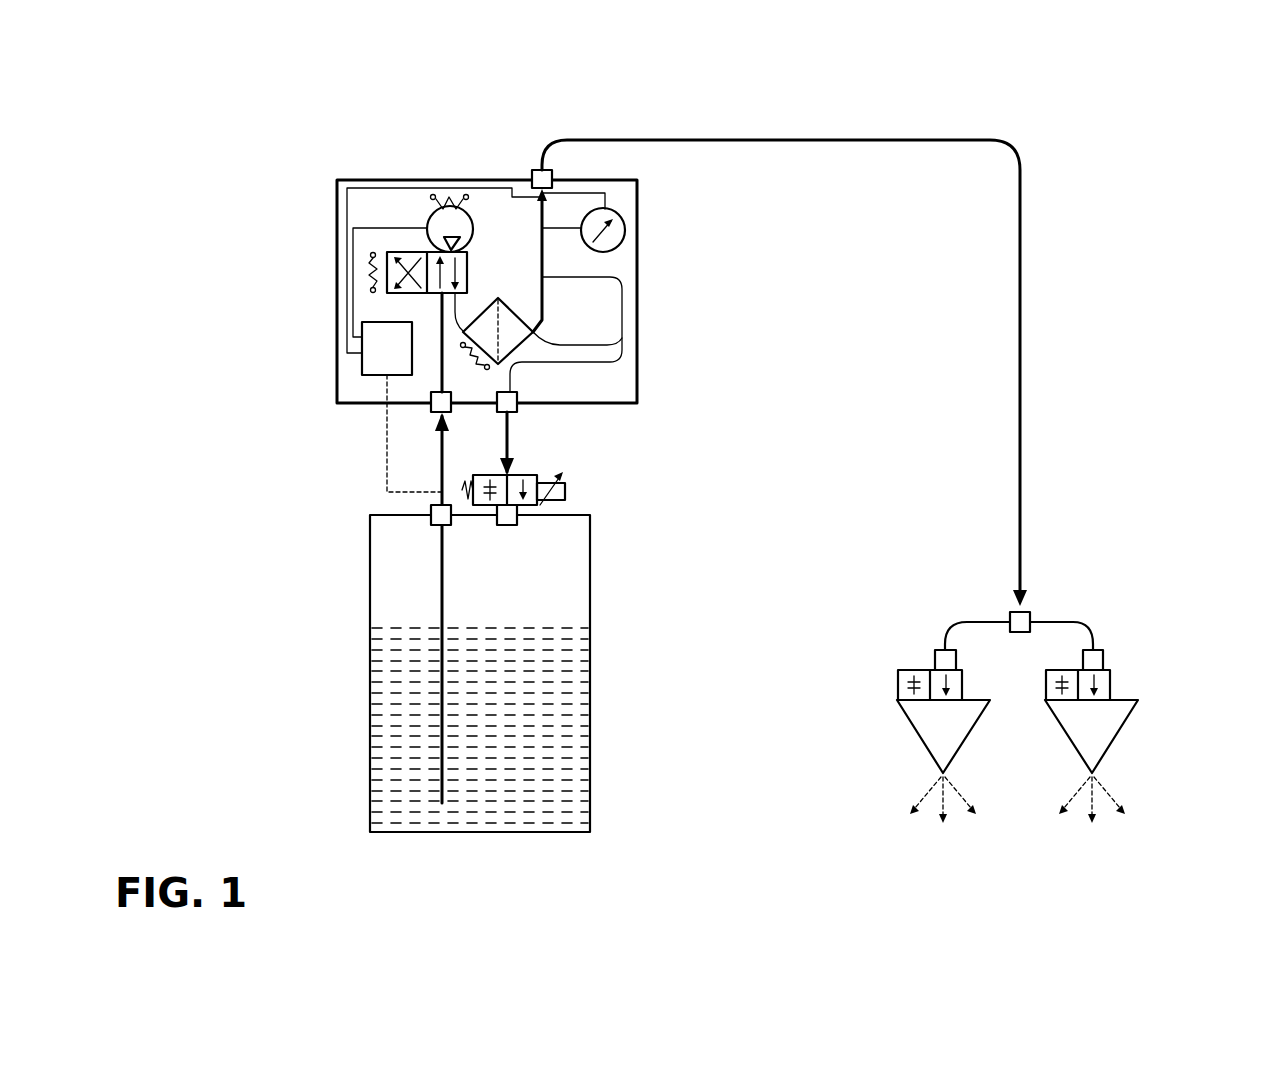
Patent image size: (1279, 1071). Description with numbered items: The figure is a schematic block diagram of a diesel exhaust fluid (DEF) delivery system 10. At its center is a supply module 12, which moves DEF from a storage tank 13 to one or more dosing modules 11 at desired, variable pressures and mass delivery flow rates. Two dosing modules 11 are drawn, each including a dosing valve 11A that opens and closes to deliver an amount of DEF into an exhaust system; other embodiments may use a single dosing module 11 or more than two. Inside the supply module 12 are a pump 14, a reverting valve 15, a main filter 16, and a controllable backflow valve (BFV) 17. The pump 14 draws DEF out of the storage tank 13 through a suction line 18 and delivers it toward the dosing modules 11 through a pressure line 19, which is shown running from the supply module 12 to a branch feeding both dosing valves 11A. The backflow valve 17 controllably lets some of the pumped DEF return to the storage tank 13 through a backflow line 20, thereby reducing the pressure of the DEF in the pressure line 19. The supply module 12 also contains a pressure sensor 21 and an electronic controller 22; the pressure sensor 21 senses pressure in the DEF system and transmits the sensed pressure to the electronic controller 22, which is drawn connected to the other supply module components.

The DEF delivery system 10 is at (214, 124).
The dosing module 11 is at (897, 700).
The dosing valve 11A is at (1143, 605).
The supply module 12 is at (337, 180).
The storage tank 13 is at (370, 565).
The pump 14 is at (428, 213).
The reverting valve 15 is at (400, 293).
The main filter 16 is at (622, 340).
The backflow valve (BFV) 17 is at (565, 490).
The suction line 18 is at (440, 445).
The pressure line 19 is at (715, 140).
The backflow line 20 is at (507, 437).
The pressure sensor 21 is at (626, 233).
The electronic controller 22 is at (362, 363).